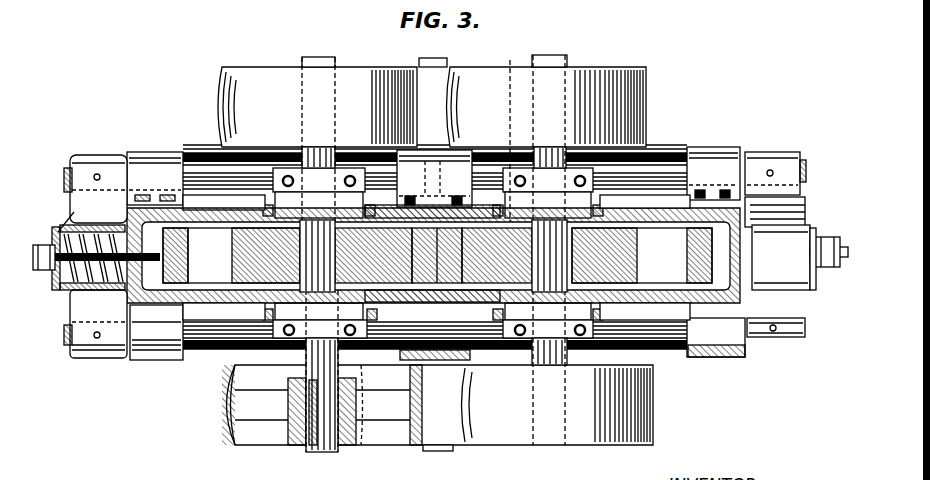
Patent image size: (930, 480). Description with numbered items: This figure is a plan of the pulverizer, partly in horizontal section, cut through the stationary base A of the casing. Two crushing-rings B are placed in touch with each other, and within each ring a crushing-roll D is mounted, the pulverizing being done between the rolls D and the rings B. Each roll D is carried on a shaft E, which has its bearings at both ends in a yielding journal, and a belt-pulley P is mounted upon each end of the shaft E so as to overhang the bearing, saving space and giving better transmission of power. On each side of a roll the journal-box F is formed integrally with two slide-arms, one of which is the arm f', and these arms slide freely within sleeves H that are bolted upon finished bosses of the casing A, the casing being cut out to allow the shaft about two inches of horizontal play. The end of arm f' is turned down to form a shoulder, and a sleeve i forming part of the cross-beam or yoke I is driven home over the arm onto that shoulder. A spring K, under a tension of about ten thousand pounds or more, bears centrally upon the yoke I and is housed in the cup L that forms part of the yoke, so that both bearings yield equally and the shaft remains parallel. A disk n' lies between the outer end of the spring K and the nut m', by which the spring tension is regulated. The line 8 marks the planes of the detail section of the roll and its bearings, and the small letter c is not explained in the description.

The belt-pulley P is at (435, 253).
The journal-box F is at (318, 158).
The sleeve H is at (157, 158).
The slide-arm f' is at (464, 246).
The cap block c is at (240, 206).
The sleeve of the yoke i is at (780, 352).
The cross-beam or yoke I is at (76, 212).
The spring K is at (60, 232).
The cup L is at (72, 300).
The nut m' is at (829, 243).
The disk n' is at (429, 277).
The crushing-ring B is at (680, 258).
The shaft E is at (433, 332).
The crushing-roll D is at (433, 255).
The casing base A is at (436, 257).
The section line 8 8 is at (320, 56).